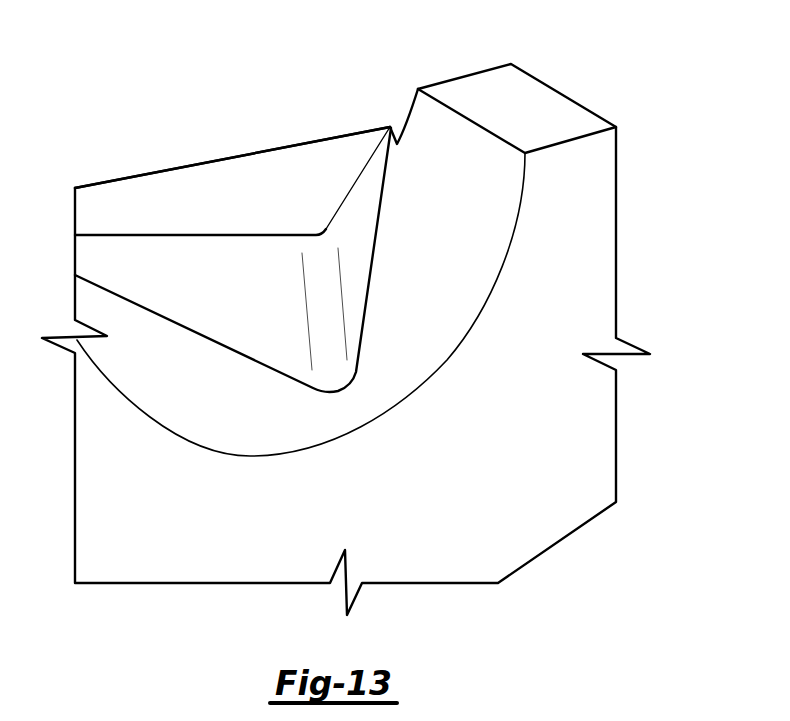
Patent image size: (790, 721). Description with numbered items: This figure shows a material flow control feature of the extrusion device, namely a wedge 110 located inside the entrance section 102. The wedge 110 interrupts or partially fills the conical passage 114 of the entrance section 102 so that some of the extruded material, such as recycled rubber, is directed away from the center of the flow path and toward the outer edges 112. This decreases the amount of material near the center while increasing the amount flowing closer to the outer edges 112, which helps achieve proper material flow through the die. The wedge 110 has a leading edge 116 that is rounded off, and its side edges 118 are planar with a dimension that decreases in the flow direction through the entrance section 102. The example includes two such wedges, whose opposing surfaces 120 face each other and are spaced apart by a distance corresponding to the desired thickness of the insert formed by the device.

The entrance section 102 is at (622, 179).
The wedge 110 is at (228, 255).
The outer edges 112 is at (448, 138).
The conical passage 114 is at (427, 256).
The leading edge 116 is at (325, 300).
The side edges 118 is at (362, 205).
The opposing surfaces 120 is at (190, 185).